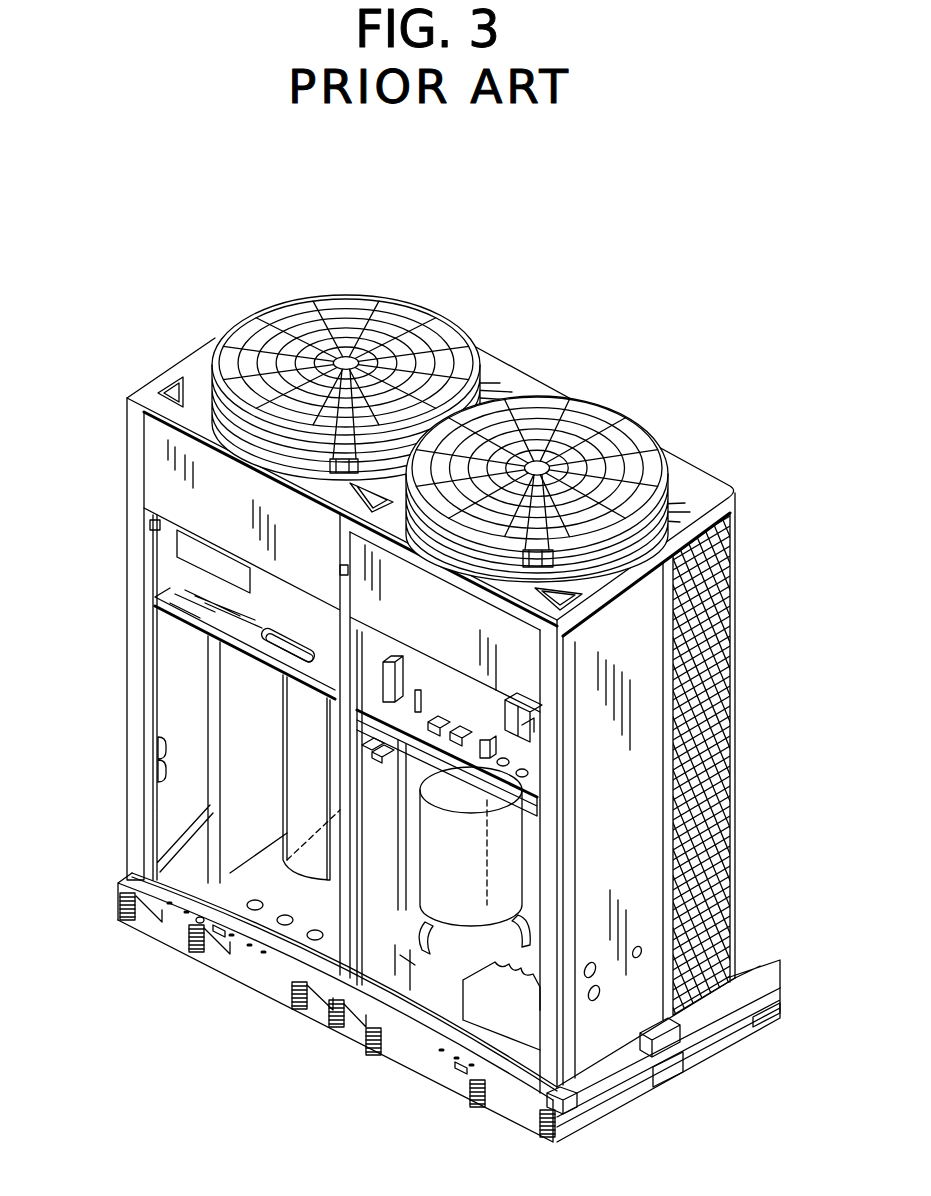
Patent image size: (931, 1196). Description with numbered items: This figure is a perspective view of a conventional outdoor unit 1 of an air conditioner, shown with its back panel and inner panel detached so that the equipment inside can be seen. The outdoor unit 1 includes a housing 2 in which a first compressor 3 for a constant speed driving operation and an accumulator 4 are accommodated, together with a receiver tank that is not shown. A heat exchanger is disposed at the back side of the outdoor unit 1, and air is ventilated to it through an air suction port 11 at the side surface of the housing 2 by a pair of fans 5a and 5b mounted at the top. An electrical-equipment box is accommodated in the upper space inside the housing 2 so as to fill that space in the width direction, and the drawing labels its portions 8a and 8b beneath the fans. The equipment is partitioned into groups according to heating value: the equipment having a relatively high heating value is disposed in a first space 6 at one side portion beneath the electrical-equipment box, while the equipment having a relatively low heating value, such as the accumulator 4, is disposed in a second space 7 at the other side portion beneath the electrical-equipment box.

The outdoor unit 1 is at (431, 715).
The housing 2 is at (128, 458).
The first compressor 3 is at (283, 735).
The accumulator 4 is at (525, 856).
The fan 5a is at (364, 284).
The fan 5b is at (603, 384).
The first space 6 is at (176, 632).
The second space 7 is at (424, 972).
The electric component box 8a is at (177, 537).
The electric component plate 8b is at (521, 766).
The air suction port 11 is at (735, 700).